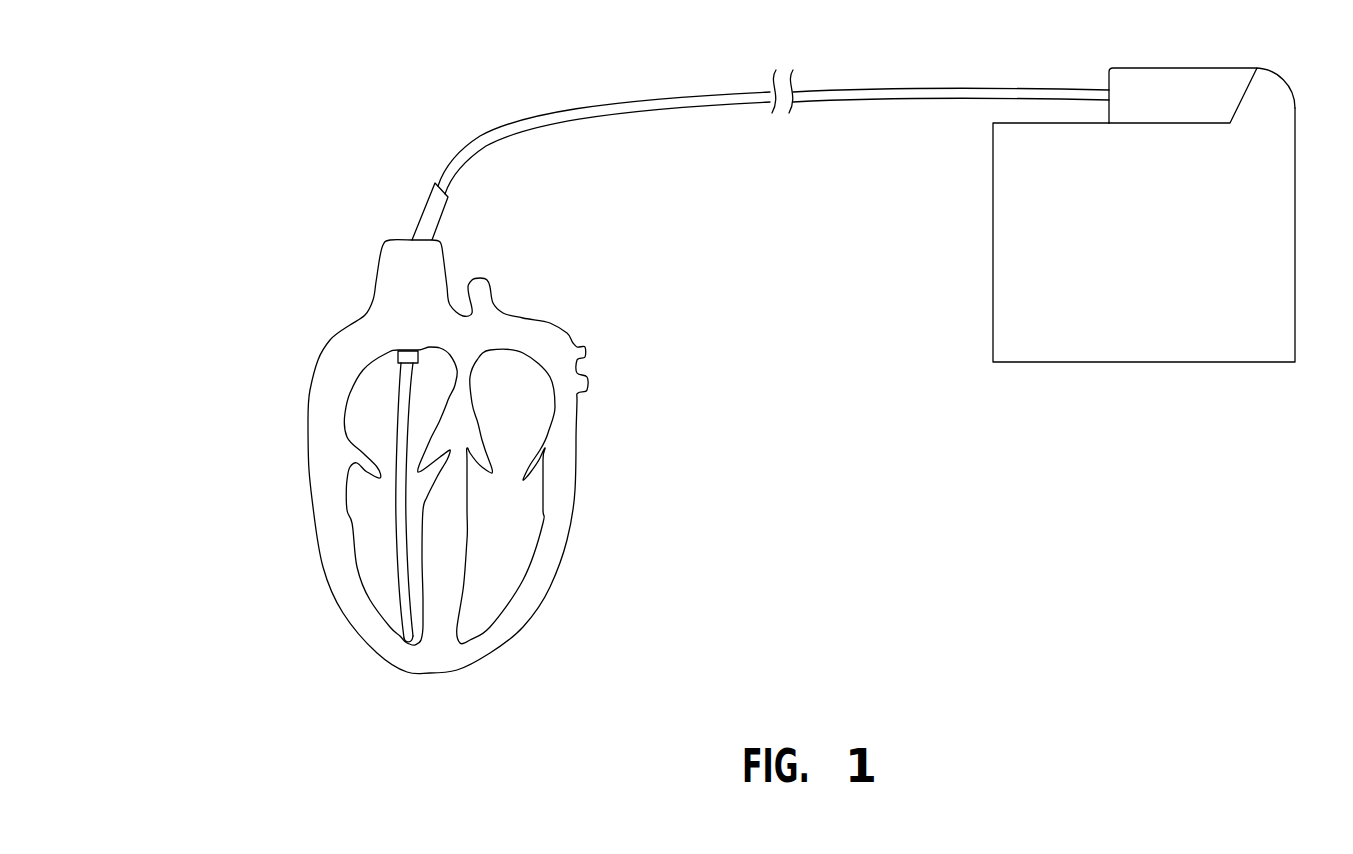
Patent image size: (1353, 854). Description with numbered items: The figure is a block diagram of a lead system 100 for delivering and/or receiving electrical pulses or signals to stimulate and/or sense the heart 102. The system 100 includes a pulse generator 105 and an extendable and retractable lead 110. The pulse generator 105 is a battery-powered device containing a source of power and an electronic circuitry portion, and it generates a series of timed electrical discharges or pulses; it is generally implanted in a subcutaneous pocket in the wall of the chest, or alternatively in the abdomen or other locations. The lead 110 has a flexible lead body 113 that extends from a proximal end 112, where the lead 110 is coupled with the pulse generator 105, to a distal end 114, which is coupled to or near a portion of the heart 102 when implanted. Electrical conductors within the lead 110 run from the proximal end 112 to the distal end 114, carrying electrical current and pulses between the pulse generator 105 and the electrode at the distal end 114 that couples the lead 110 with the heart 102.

The lead system 100 is at (260, 630).
The heart 102 is at (343, 338).
The pulse generator 105 is at (1295, 118).
The lead 110 is at (423, 207).
The proximal end 112 is at (1056, 91).
The flexible lead body 113 is at (681, 96).
The distal end 114 is at (403, 633).